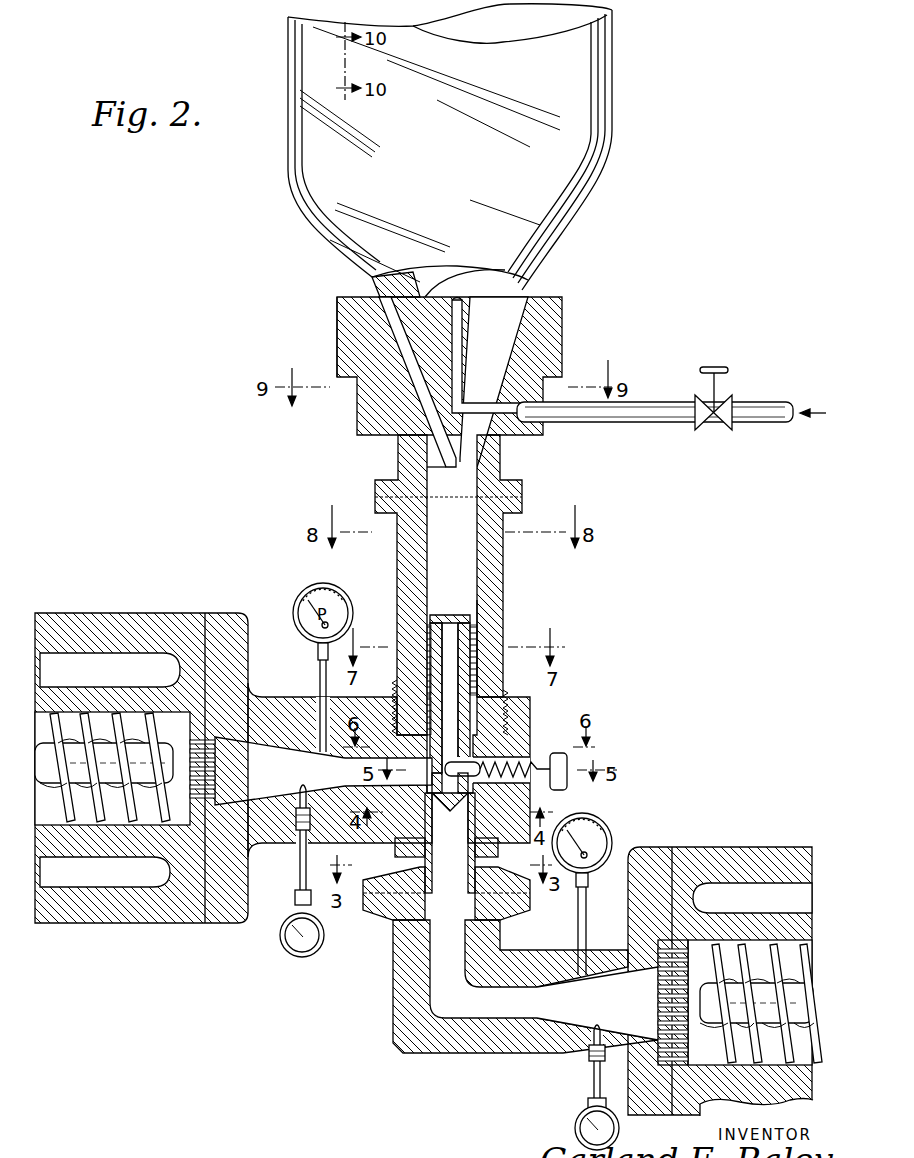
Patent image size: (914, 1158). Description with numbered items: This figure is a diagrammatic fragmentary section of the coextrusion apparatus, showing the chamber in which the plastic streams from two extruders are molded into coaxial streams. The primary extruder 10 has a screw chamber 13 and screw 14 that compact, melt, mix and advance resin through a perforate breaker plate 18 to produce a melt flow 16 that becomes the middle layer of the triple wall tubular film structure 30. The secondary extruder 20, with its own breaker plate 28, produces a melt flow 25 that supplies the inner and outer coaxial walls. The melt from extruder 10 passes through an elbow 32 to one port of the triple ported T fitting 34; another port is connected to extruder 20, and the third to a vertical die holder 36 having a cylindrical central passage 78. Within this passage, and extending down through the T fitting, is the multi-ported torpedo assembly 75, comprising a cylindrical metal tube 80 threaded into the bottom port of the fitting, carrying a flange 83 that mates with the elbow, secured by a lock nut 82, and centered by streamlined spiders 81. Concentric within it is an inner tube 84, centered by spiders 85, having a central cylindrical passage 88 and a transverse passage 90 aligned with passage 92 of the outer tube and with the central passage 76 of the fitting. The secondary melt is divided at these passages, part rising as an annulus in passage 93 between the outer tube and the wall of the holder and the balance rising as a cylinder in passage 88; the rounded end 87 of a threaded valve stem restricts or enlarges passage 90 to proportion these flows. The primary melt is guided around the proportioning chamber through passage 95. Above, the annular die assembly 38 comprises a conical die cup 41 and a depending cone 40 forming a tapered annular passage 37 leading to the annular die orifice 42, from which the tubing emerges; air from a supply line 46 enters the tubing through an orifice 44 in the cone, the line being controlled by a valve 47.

The primary thermoplastic resin extruder 10 is at (690, 846).
The screw chamber 13 is at (165, 727).
The screw 14 is at (124, 717).
The melt flow 16 is at (573, 1003).
The perforate breaker plate 18 is at (660, 965).
The secondary thermoplastic resin extruder 20 is at (98, 613).
The melt flow 25 is at (240, 757).
The perforate breaker plate 28 is at (206, 612).
The triple wall tubular film structure 30 is at (604, 80).
The elbow 32 is at (393, 970).
The triple ported T fitting 34 is at (532, 698).
The vertical die holder 36 is at (505, 527).
The tapered annular passage 37 is at (400, 353).
The annular die assembly 38 is at (562, 321).
The depending cone 40 is at (470, 380).
The conical die cup 41 is at (337, 320).
The annular die orifice 42 is at (460, 300).
The orifice 44 is at (458, 290).
The supply line 46 is at (668, 425).
The valve 47 is at (718, 366).
The multi-ported torpedo assembly 75 is at (477, 648).
The central passage 76 is at (312, 849).
The cylindrical central passage 78 is at (440, 541).
The cylindrical metal tube 80 is at (429, 622).
The streamlined spiders 81 is at (430, 642).
The lock nut 82 is at (499, 850).
The flange 83 is at (533, 887).
The inner tube 84 is at (443, 612).
The streamlined spiders 85 is at (472, 640).
The rounded end 87 is at (472, 760).
The central cylindrical passage 88 is at (452, 612).
The transverse passage 90 is at (430, 790).
The passage 92 is at (430, 770).
The passage 93 is at (428, 682).
The passage 95 is at (438, 670).